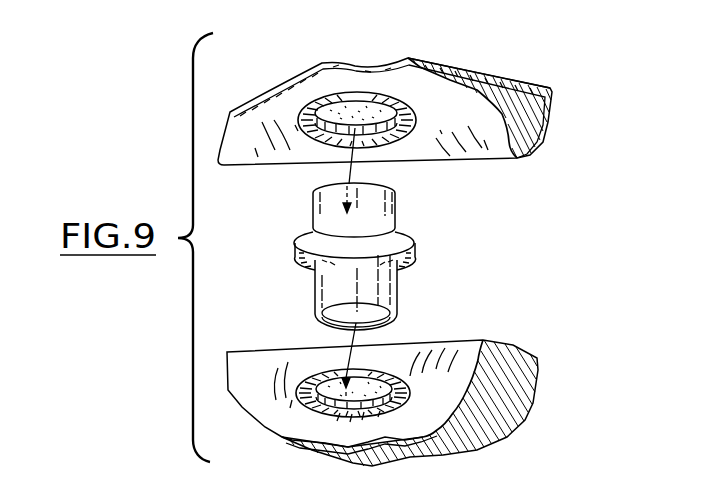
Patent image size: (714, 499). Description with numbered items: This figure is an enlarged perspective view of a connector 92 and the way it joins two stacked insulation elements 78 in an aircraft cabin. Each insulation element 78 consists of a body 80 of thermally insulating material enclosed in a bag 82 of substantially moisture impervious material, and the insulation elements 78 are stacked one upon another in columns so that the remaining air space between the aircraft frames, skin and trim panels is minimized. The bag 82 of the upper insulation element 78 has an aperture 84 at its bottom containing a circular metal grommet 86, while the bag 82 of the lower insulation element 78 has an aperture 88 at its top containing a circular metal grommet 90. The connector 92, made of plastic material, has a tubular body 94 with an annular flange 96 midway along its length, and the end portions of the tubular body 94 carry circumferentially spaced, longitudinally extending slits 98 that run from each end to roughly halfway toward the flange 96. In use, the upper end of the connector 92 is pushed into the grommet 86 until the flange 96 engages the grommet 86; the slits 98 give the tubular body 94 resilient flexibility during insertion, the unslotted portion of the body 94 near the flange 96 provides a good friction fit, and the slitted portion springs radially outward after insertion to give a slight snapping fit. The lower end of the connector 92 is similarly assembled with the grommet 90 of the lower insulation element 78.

The insulation element 78 is at (480, 173).
The body 80 is at (482, 75).
The bag 82 is at (410, 73).
The aperture 84 is at (346, 108).
The grommet 86 is at (310, 101).
The aperture 88 is at (345, 378).
The grommet 90 is at (312, 409).
The connector 92 is at (345, 254).
The tubular body 94 is at (313, 208).
The annular flange 96 is at (413, 253).
The slits 98 is at (393, 198).